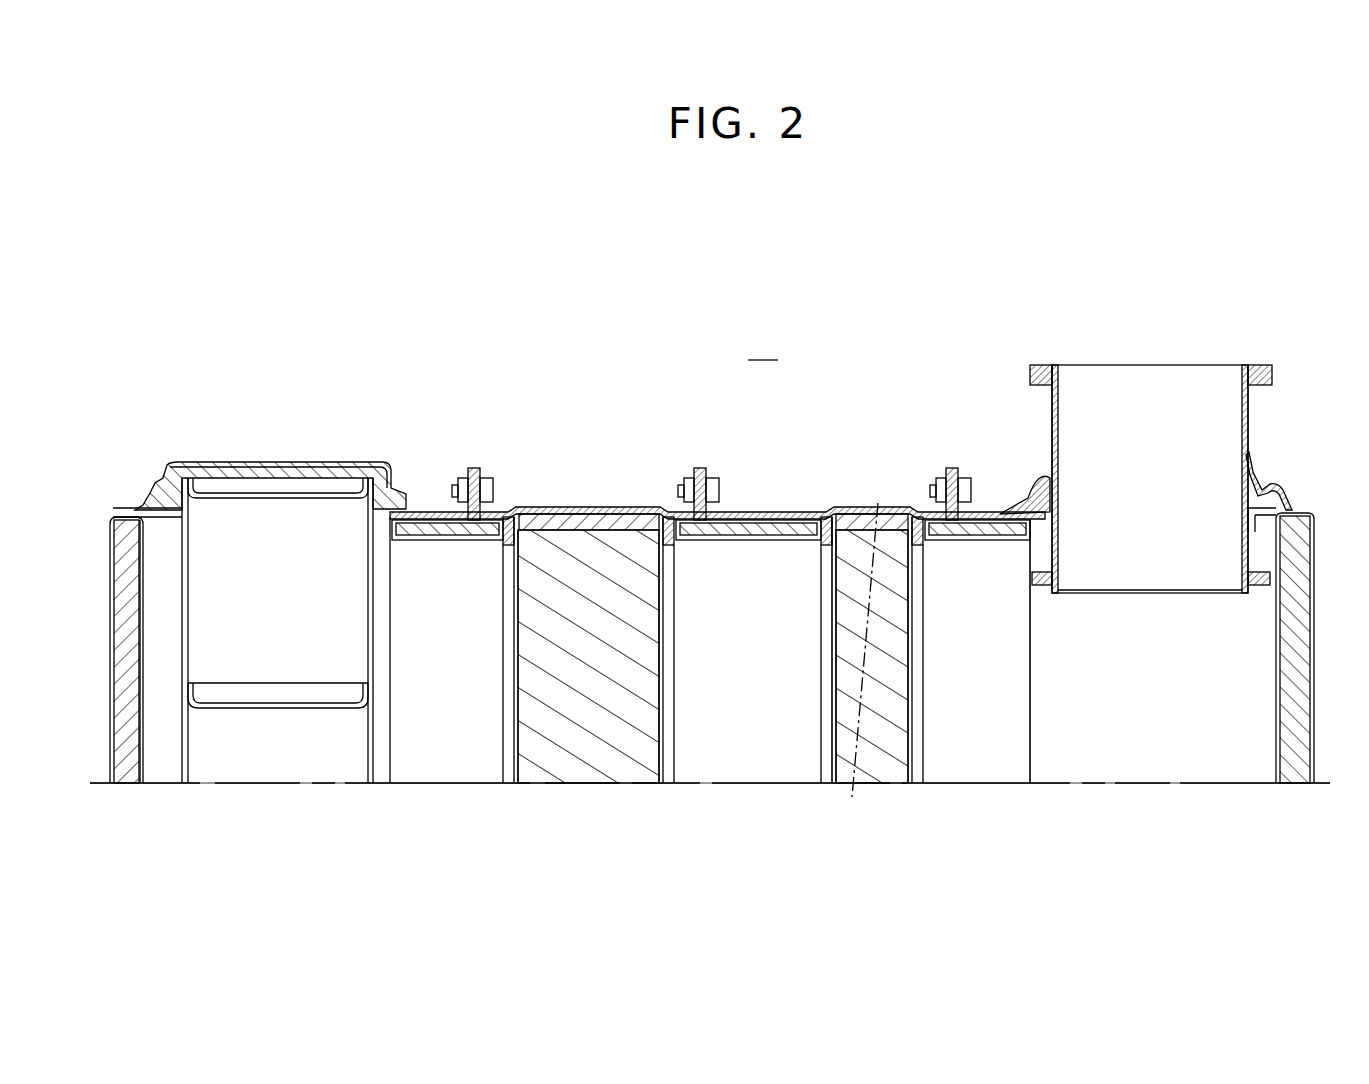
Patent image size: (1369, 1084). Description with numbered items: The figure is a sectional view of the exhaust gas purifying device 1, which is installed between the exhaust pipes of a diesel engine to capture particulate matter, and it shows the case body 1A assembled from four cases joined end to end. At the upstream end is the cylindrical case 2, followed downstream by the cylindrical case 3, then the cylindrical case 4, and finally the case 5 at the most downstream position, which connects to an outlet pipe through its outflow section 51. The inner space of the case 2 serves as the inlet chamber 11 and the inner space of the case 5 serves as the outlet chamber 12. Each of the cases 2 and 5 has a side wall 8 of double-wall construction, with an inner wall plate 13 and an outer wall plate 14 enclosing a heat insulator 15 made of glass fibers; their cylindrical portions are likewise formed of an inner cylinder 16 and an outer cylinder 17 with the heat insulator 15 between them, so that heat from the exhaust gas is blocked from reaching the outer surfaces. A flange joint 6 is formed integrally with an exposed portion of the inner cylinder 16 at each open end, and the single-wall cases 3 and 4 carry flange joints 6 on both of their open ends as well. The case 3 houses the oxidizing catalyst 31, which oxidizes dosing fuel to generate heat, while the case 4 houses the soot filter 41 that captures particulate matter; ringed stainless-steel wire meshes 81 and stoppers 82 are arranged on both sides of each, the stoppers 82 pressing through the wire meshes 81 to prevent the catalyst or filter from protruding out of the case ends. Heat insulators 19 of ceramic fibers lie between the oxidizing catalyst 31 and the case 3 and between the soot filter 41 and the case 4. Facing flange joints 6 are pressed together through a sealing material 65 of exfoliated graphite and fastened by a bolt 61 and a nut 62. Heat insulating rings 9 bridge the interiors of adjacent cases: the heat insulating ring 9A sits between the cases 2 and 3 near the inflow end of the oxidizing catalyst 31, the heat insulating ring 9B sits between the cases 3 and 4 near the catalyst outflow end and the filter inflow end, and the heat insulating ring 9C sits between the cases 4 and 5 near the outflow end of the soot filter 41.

The exhaust gas purifying device 1 is at (848, 238).
The case body 1A is at (762, 510).
The cylindrical case 2 is at (262, 462).
The cylindrical case 3 is at (585, 508).
The cylindrical case 4 is at (868, 508).
The case 5 is at (990, 512).
The flange joint 6 is at (691, 457).
The side wall 8 is at (729, 631).
The heat insulating ring 9 is at (710, 650).
The heat insulating ring 9A is at (422, 540).
The heat insulating ring 9B is at (735, 540).
The heat insulating ring 9C is at (988, 540).
The inlet chamber 11 is at (265, 758).
The outlet chamber 12 is at (1141, 743).
The inner wall plate 13 is at (143, 567).
The outer wall plate 14 is at (110, 535).
The heat insulator 15 is at (180, 472).
The inner cylinder 16 is at (368, 527).
The outer cylinder 17 is at (312, 462).
The heat insulator 19 is at (632, 522).
The oxidizing catalyst 31 is at (660, 758).
The soot filter 41 is at (835, 762).
The outflow section 51 is at (1182, 362).
The bolt 61 is at (492, 486).
The nut 62 is at (457, 486).
The sealing material 65 is at (476, 468).
The wire mesh 81 is at (520, 545).
The stopper 82 is at (505, 540).